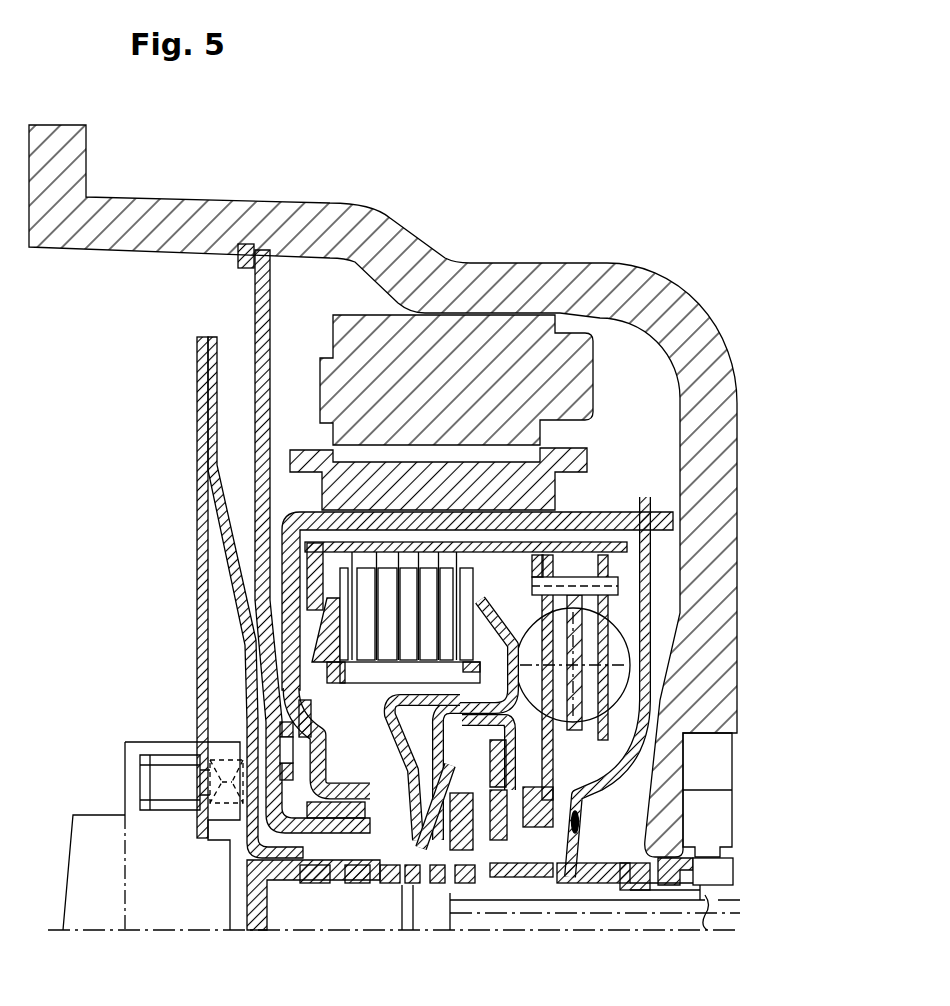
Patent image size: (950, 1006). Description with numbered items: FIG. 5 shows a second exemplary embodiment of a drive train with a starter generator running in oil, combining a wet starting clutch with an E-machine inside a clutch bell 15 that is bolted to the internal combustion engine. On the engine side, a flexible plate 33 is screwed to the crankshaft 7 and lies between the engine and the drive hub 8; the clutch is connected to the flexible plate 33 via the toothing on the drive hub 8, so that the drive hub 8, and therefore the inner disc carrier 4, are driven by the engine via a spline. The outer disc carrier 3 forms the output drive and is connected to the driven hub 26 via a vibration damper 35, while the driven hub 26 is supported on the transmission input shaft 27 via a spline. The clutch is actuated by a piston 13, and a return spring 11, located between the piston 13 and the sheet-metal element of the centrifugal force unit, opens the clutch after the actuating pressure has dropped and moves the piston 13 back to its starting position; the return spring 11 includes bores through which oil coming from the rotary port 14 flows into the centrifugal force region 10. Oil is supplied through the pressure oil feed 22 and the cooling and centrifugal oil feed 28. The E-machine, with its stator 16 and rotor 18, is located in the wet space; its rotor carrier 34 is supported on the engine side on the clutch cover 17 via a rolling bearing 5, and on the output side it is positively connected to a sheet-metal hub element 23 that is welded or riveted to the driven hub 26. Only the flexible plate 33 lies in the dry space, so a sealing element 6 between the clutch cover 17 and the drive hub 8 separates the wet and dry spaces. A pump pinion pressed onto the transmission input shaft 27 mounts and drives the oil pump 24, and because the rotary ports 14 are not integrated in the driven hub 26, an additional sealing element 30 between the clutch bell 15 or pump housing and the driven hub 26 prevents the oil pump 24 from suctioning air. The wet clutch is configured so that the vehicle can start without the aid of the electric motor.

The outer disc carrier 3 is at (310, 578).
The inner disc carrier 4 is at (352, 674).
The rolling bearing 5 is at (332, 815).
The sealing element 6 is at (330, 890).
The crankshaft 7 is at (107, 889).
The drive hub 8 is at (250, 872).
The centrifugal force region 10 is at (378, 862).
The return spring 11 is at (433, 800).
The piston 13 is at (490, 858).
The rotary port 14 is at (445, 868).
The clutch bell 15 is at (583, 272).
The stator of starter generator 16 is at (572, 383).
The clutch cover 17 is at (262, 297).
The rotor of starter generator 18 is at (540, 496).
The pressure oil feed 22 is at (660, 905).
The sheet-metal hub element 23 is at (640, 612).
The oil pump 24 is at (696, 773).
The driven hub 26 is at (622, 880).
The transmission input shaft 27 is at (705, 895).
The cooling and centrifugal oil feed 28 is at (405, 880).
The sealing element 30 is at (695, 877).
The flexible plate 33 is at (205, 372).
The rotor carrier 34 is at (623, 515).
The vibration damper 35 is at (630, 680).